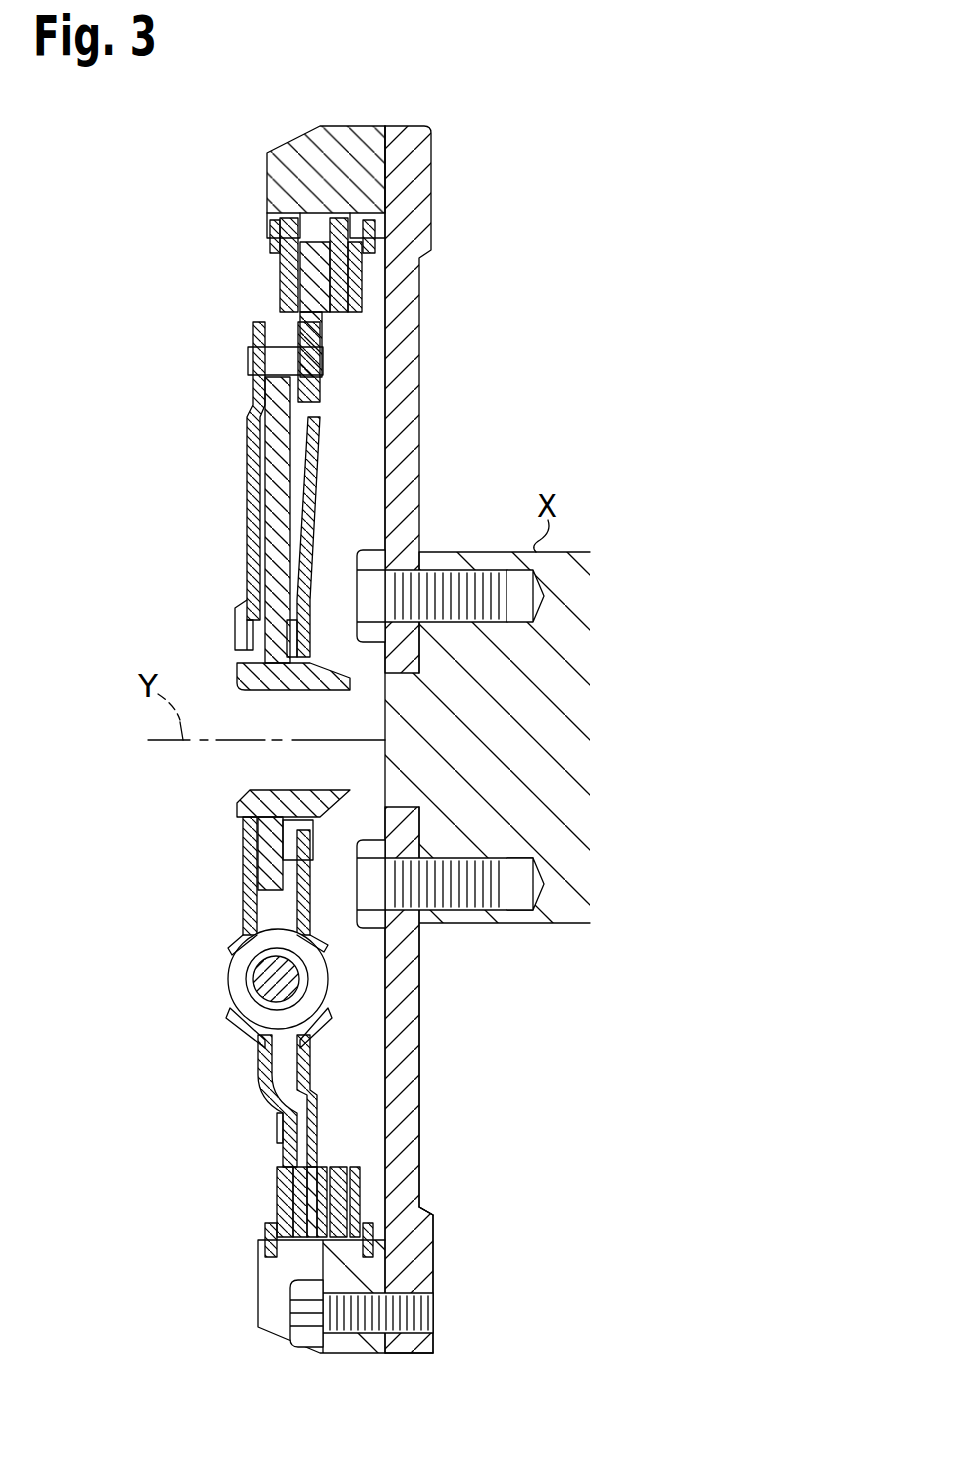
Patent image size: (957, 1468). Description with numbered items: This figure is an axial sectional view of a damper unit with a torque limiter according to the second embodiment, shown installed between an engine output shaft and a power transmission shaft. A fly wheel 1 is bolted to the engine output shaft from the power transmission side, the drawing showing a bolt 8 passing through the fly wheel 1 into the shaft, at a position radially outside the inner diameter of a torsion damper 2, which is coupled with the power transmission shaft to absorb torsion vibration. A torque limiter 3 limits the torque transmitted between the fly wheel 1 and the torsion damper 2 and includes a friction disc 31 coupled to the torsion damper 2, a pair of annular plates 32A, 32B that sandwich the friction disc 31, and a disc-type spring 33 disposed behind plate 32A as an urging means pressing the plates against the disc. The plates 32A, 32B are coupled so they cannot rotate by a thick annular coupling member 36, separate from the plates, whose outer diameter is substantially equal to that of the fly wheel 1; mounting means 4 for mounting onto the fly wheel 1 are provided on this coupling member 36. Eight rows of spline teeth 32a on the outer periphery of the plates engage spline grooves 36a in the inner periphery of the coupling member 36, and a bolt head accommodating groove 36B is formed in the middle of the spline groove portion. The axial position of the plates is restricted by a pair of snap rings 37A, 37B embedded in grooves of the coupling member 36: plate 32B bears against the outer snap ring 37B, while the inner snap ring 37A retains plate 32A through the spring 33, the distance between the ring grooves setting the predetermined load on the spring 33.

The fly wheel 1 is at (415, 442).
The torsion damper 2 is at (226, 563).
The torque limiter 3 is at (322, 227).
The mounting means 4 is at (300, 1310).
The bolt 8 is at (362, 556).
The friction disc 31 is at (318, 1165).
The spline teeth 32a is at (345, 238).
The plate 32A is at (358, 296).
The plate 32B is at (280, 278).
The disc-type spring 33 is at (362, 1183).
The coupling member 36 is at (267, 186).
The spline grooves 36a is at (270, 224).
The bolt head accommodating groove 36B is at (258, 1287).
The snap ring 37A is at (425, 1208).
The snap ring 37B is at (265, 1240).